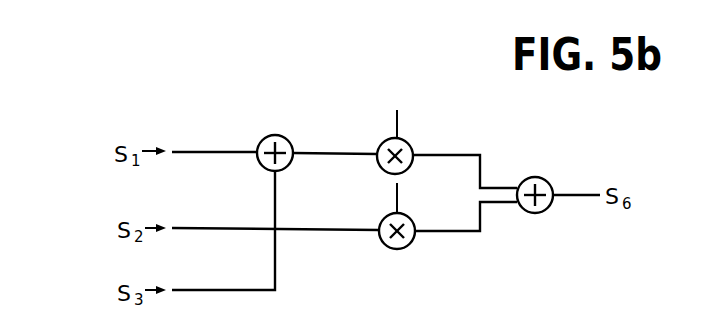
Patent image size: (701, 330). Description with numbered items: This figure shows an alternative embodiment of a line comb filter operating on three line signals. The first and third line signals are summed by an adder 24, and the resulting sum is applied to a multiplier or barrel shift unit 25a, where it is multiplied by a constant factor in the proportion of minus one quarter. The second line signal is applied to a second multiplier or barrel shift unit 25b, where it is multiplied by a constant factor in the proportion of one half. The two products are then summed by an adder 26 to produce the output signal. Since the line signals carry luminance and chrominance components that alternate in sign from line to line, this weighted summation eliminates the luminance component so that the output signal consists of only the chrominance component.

The adder 24 is at (274, 135).
The multiplier or barrel shift unit 25a is at (386, 140).
The multiplier or barrel shift unit 25b is at (409, 246).
The adder 26 is at (543, 211).